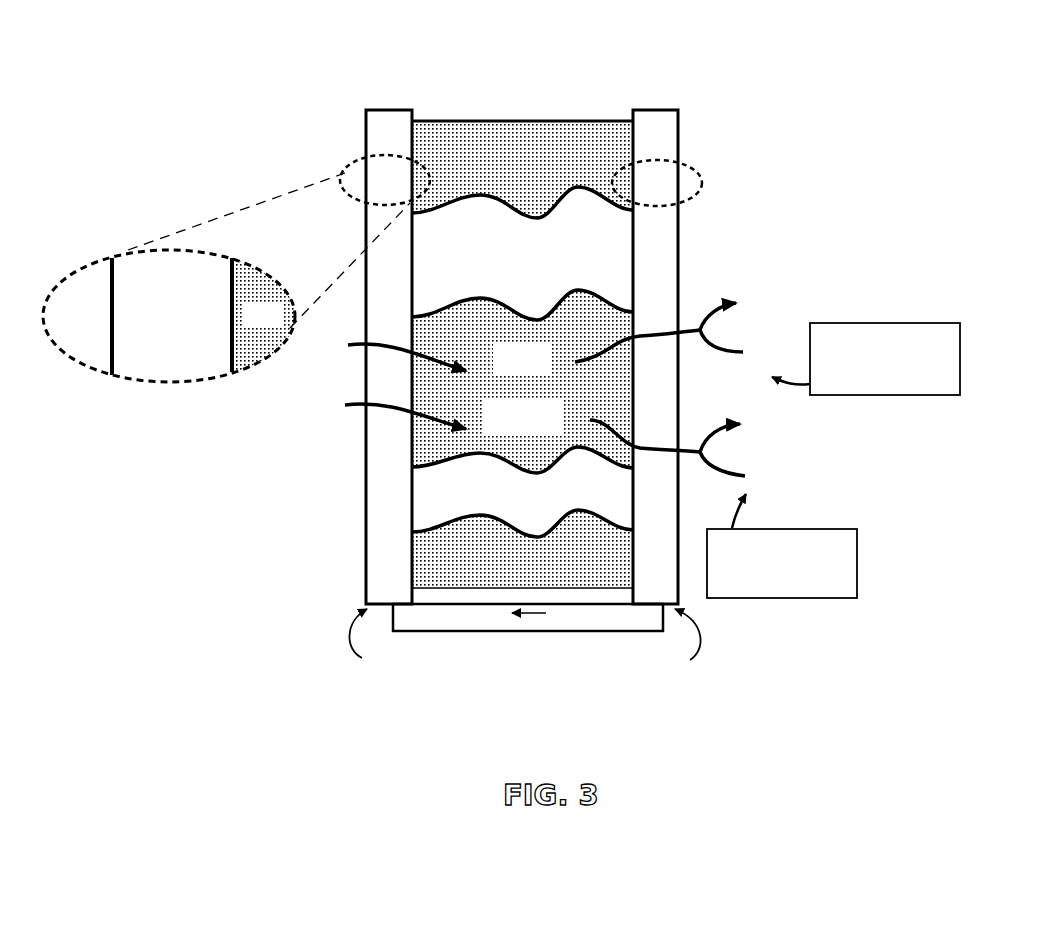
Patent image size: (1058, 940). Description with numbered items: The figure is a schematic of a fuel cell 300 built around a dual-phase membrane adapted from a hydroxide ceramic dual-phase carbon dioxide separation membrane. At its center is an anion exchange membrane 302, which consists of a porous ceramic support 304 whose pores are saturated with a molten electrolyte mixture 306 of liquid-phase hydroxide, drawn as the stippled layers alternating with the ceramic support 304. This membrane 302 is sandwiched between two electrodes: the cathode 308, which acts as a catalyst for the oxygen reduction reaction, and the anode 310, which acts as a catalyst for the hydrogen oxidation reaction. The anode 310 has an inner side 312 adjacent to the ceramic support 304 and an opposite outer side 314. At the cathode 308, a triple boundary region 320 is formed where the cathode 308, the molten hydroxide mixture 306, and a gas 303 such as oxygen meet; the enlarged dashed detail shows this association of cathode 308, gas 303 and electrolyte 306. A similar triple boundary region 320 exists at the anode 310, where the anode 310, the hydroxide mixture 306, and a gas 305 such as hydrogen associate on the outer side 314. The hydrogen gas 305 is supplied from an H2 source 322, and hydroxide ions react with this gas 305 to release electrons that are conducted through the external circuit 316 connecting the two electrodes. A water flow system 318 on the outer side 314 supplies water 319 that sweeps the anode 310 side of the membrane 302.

The fuel cell 300 is at (364, 48).
The anion exchange membrane 302 is at (513, 117).
The gas 303 is at (375, 383).
The porous ceramic support 304 is at (522, 375).
The gas 305 is at (802, 358).
The molten electrolyte mixture 306 is at (522, 354).
The cathode 308 is at (378, 130).
The anode 310 is at (668, 130).
The inner side 312 is at (631, 256).
The outer side 314 is at (681, 256).
The external circuit 316 is at (510, 632).
The water flow system 318 is at (800, 599).
The water 319 is at (765, 532).
The triple boundary region 320 is at (117, 239).
The H2 source 322 is at (902, 396).